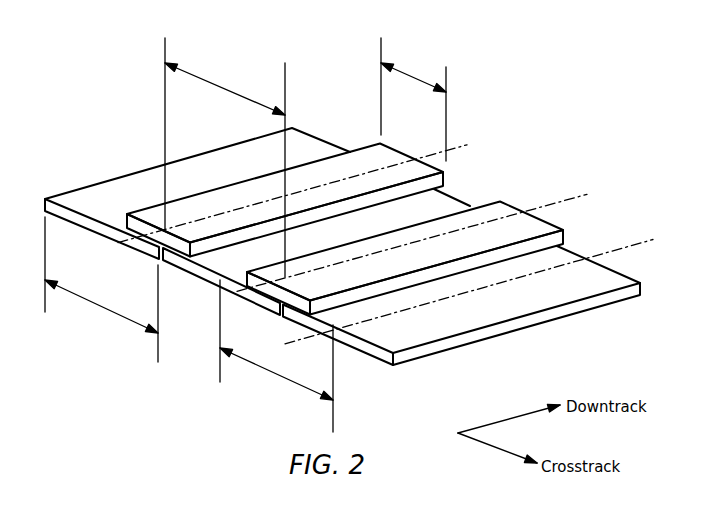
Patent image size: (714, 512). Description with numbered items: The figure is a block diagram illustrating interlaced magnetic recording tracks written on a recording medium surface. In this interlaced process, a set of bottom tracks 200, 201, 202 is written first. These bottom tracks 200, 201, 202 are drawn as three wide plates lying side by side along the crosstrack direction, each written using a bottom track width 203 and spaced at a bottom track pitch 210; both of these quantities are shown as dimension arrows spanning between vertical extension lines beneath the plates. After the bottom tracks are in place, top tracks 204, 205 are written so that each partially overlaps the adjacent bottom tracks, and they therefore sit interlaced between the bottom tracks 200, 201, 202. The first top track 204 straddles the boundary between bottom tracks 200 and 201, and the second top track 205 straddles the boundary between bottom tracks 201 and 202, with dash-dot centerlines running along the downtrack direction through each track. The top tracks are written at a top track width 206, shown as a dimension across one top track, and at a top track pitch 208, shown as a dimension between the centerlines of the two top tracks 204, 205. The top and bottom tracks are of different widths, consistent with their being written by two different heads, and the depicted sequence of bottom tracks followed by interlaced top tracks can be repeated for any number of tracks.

The bottom track 200 is at (101, 238).
The bottom track 201 is at (185, 280).
The bottom track 202 is at (368, 358).
The bottom track width 203 is at (100, 307).
The top track 204 is at (355, 158).
The top track 205 is at (513, 199).
The top track width 206 is at (410, 75).
The top track pitch 208 is at (232, 92).
The bottom track pitch 210 is at (272, 372).